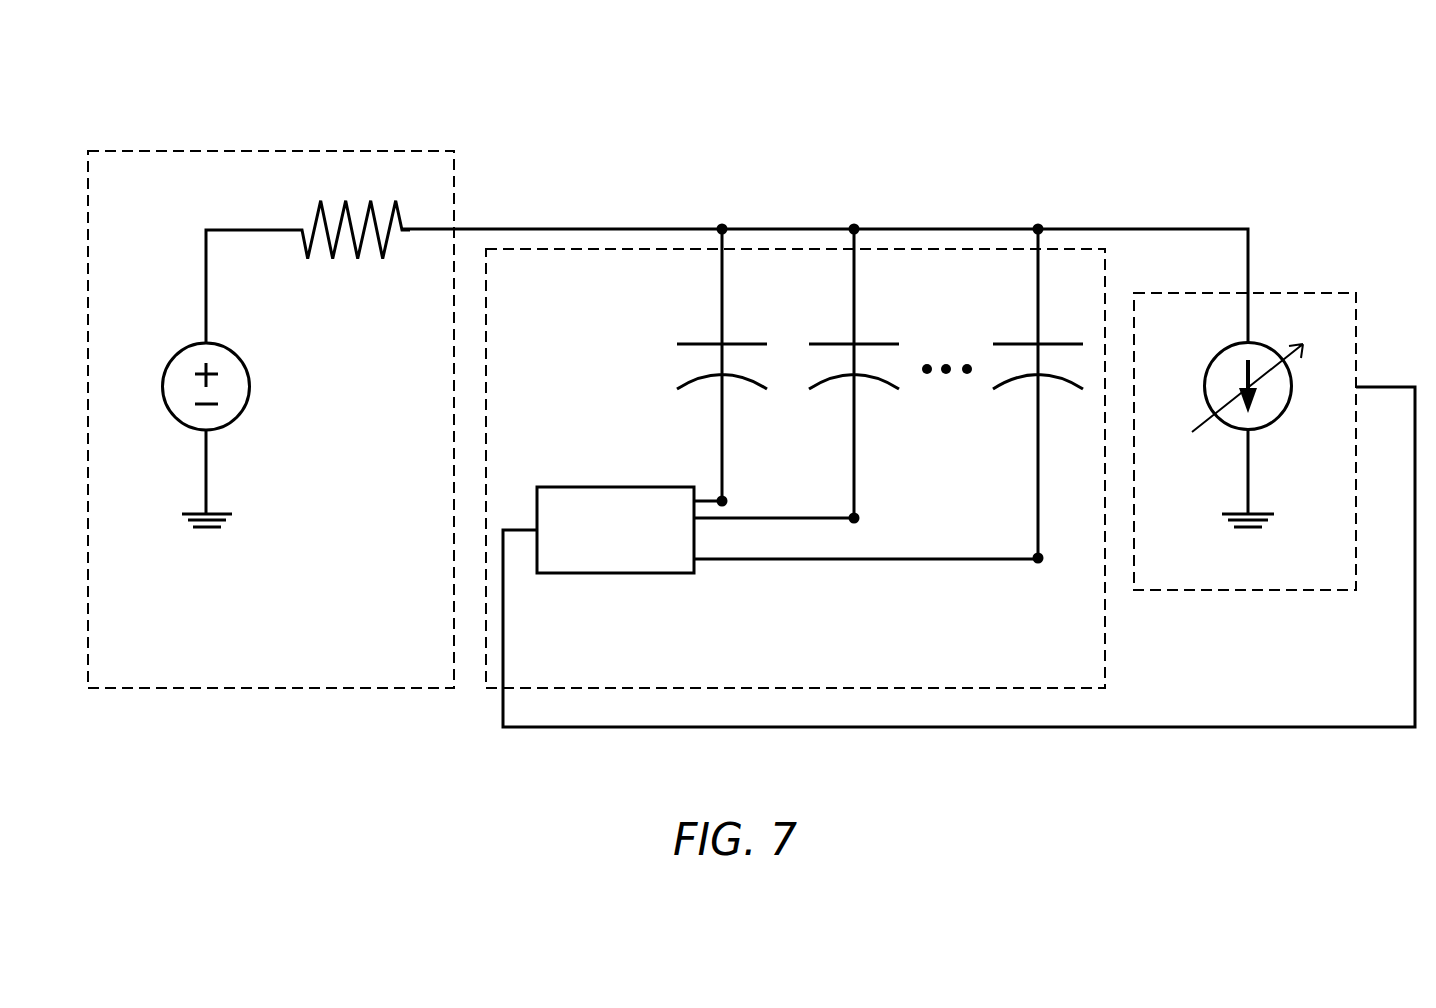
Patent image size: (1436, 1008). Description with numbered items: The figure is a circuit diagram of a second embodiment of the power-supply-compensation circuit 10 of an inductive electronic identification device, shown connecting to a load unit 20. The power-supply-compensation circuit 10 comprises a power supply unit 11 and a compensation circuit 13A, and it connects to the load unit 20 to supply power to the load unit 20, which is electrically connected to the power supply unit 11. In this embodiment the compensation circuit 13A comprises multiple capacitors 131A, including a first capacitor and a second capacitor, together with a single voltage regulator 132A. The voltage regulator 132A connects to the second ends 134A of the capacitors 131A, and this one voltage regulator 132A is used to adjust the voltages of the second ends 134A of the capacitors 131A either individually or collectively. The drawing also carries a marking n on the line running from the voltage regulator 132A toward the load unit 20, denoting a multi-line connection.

The power supply unit 11 is at (164, 138).
The power-supply-compensation circuit 10 is at (563, 213).
The load unit 20 is at (1321, 276).
The compensation circuit 13A is at (552, 703).
The capacitors 131A is at (692, 333).
The voltage regulator 132A is at (605, 487).
The second ends 134A is at (722, 506).
The n-bit control signal n is at (675, 747).